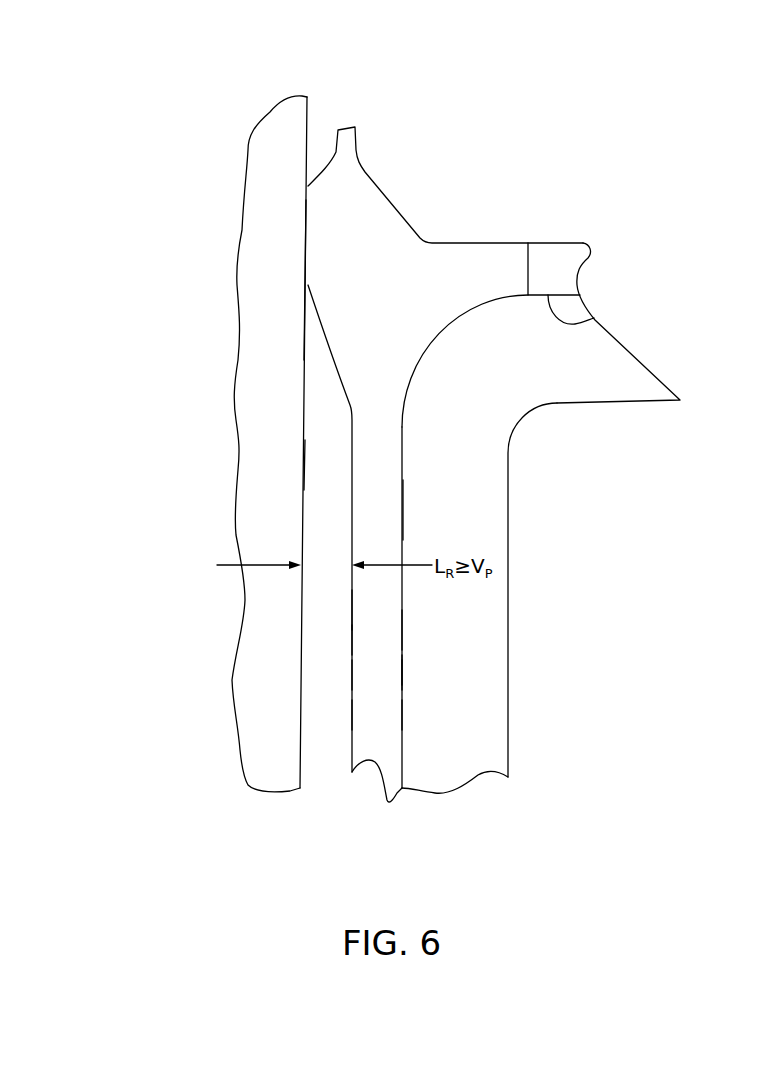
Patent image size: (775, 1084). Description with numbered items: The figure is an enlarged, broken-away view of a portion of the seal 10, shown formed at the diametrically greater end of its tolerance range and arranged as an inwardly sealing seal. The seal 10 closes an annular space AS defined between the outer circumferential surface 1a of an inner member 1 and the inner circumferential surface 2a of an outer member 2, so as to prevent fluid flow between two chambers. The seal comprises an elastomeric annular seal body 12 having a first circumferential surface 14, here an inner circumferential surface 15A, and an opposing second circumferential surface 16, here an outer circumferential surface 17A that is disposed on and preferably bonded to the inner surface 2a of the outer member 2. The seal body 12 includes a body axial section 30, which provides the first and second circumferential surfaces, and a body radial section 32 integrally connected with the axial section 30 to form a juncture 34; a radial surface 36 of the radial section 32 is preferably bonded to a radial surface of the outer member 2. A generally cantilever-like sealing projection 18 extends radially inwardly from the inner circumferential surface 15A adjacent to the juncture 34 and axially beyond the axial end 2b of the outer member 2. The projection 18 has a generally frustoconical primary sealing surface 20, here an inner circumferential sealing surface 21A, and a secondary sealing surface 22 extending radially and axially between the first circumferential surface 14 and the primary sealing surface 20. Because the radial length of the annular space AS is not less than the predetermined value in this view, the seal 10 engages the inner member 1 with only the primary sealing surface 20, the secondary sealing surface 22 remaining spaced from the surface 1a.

The seal 10 is at (492, 126).
The inner member 1 is at (238, 434).
The outer circumferential surface 1a is at (300, 477).
The annular space AS is at (325, 518).
The outer member 2 is at (497, 742).
The inner circumferential surface 2a is at (395, 528).
The axial end 2b is at (528, 243).
The annular seal body 12 is at (349, 713).
The first circumferential surface 14 is at (339, 610).
The inner circumferential surface 15A is at (350, 639).
The second circumferential surface 16 is at (413, 628).
The outer circumferential surface 17A is at (402, 665).
The sealing projection 18 is at (345, 242).
The primary sealing surface 20 is at (294, 238).
The inner circumferential sealing surface 21A is at (305, 268).
The secondary sealing surface 22 is at (318, 362).
The body axial section 30 is at (365, 675).
The body radial section 32 is at (555, 255).
The juncture 34 is at (423, 318).
The radial surface 36 is at (592, 318).